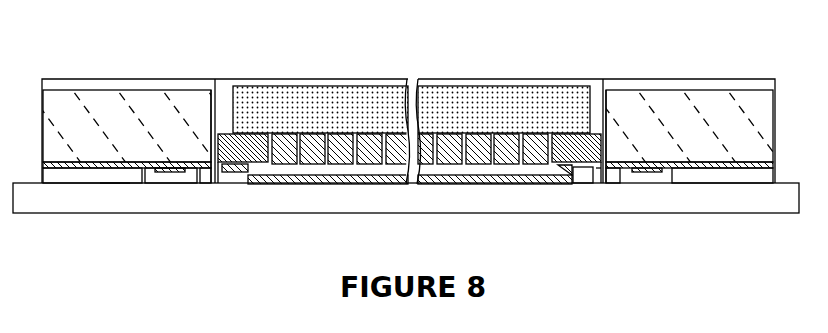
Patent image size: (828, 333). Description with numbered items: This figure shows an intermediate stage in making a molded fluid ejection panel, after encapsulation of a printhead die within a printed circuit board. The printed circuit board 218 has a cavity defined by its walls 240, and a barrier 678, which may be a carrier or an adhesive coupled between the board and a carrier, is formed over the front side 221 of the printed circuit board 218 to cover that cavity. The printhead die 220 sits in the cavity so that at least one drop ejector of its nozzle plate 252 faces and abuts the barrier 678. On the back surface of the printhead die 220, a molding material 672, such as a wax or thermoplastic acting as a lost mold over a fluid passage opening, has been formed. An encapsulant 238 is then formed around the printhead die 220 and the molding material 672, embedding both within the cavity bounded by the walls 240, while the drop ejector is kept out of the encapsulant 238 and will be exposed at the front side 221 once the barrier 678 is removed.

The printed circuit board 218 is at (95, 97).
The printhead die 220 is at (243, 122).
The front side of the printed circuit board 221 is at (115, 186).
The encapsulant 238 is at (664, 90).
The cavity walls 240 is at (216, 90).
The nozzle plate 252 is at (521, 182).
The molding material 672 is at (455, 100).
The barrier 678 is at (642, 200).